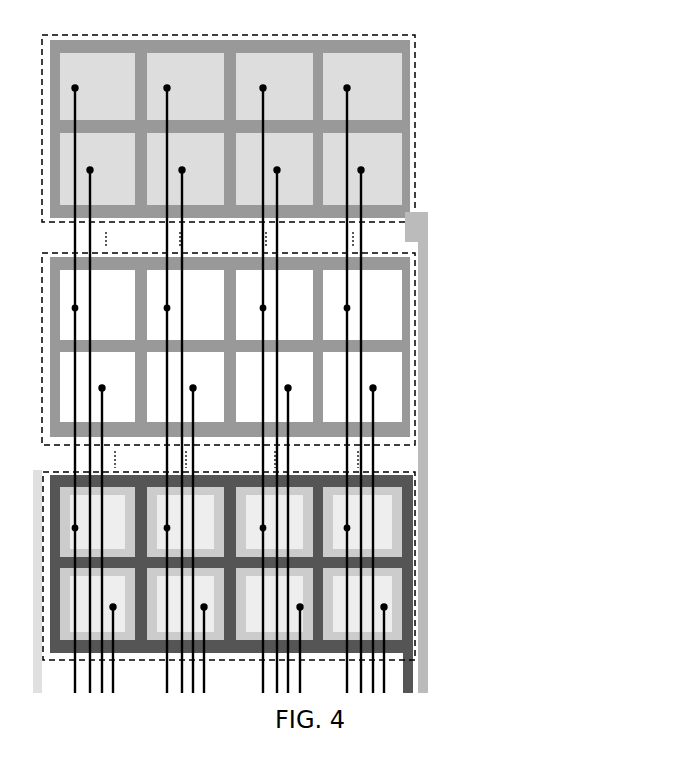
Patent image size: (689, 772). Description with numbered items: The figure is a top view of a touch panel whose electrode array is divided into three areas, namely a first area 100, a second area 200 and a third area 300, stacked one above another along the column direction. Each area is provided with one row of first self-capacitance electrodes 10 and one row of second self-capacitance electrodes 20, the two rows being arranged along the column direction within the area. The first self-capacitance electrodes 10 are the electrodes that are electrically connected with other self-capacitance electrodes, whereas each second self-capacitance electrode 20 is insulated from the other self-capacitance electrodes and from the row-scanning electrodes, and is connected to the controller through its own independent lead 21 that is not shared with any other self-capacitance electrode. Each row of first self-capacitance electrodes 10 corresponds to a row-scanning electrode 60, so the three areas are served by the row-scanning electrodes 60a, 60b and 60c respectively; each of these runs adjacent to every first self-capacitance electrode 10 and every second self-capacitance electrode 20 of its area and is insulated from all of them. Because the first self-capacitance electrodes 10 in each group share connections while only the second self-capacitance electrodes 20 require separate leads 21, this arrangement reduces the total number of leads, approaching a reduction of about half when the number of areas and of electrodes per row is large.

The first self-capacitance electrode 10 is at (368, 70).
The second self-capacitance electrode 20 is at (381, 172).
The independent lead 21 is at (393, 445).
The row-scanning electrode 60 is at (495, 441).
The row-scanning electrode 60a is at (412, 212).
The row-scanning electrode 60b is at (402, 405).
The row-scanning electrode 60c is at (464, 600).
The first area 100 is at (288, 126).
The second area 200 is at (407, 330).
The third area 300 is at (420, 542).